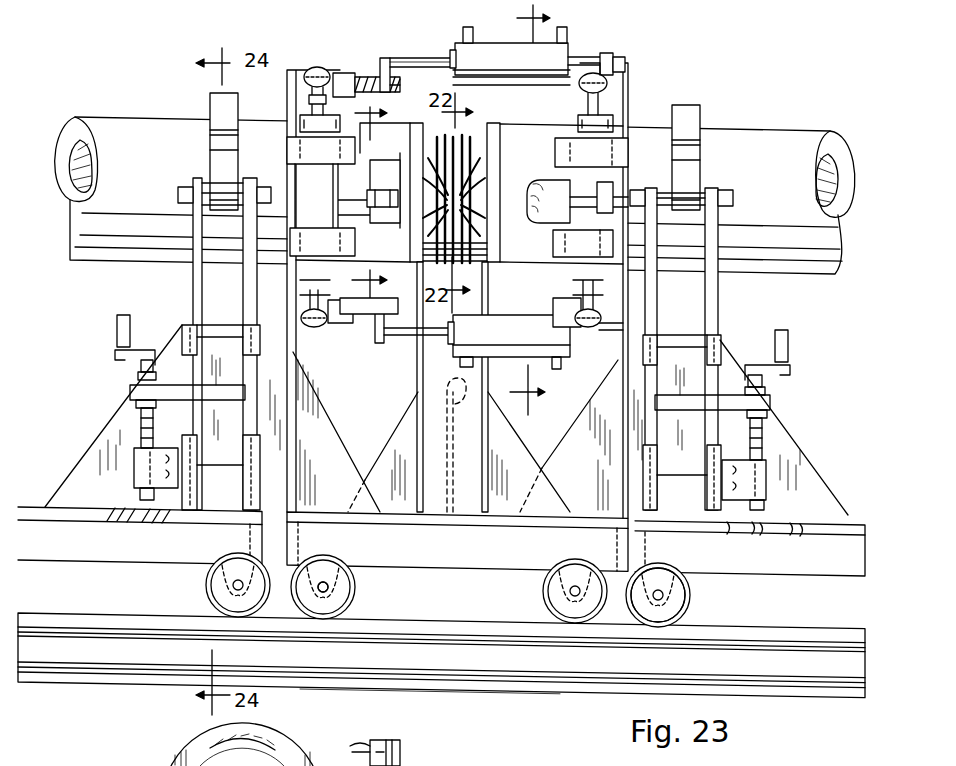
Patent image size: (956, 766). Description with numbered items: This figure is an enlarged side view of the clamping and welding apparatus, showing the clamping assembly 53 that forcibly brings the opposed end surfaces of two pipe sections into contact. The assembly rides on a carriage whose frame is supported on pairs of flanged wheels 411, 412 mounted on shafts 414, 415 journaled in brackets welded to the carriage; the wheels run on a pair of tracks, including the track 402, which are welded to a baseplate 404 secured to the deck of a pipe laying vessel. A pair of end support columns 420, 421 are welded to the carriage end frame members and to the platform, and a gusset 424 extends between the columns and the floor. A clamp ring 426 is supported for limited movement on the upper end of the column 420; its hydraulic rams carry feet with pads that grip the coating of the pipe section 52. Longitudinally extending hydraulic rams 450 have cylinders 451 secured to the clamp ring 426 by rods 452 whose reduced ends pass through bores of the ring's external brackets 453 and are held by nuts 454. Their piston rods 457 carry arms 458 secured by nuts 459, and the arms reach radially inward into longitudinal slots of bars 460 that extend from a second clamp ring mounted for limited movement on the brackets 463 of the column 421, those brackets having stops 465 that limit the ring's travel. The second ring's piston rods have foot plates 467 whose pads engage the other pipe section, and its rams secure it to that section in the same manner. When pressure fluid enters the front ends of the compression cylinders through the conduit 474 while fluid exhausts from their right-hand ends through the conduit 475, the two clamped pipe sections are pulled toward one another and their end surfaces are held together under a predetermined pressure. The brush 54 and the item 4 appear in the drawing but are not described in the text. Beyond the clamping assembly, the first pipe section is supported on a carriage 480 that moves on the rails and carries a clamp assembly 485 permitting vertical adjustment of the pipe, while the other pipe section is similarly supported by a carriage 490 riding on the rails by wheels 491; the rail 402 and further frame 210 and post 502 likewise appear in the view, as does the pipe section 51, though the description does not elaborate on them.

The guide plate 4 is at (610, 158).
The first pipe section 51 is at (124, 117).
The pipe section 52 is at (797, 135).
The clamping assembly 53 is at (662, 75).
The wire brush 54 is at (436, 128).
The carriage frame 210 is at (468, 575).
The track 402 is at (578, 676).
The baseplate 404 is at (518, 690).
The flanged wheel 411 is at (562, 617).
The flanged wheel 412 is at (348, 590).
The shaft 414 is at (570, 590).
The shaft 415 is at (328, 590).
The end support column 420 is at (614, 378).
The end support column 421 is at (287, 413).
The gusset 424 is at (336, 438).
The clamp ring 426 is at (582, 178).
The longitudinally extending hydraulic ram 450 is at (487, 43).
The cylinder 451 is at (513, 68).
The rod 452 is at (585, 57).
The external bracket 453 is at (608, 53).
The nut 454 is at (622, 57).
The piston rod 457 is at (440, 52).
The arm 458 is at (388, 56).
The nut 459 is at (366, 72).
The bar 460 is at (400, 85).
The bracket 463 is at (298, 147).
The stop 465 is at (343, 73).
The foot plate 467 is at (317, 67).
The conduit 474 is at (468, 27).
The conduit 475 is at (562, 27).
The carriage 480 is at (108, 565).
The clamp assembly 485 is at (168, 296).
The carriage 490 is at (770, 580).
The wheel 491 is at (665, 615).
The central post 502 is at (463, 376).